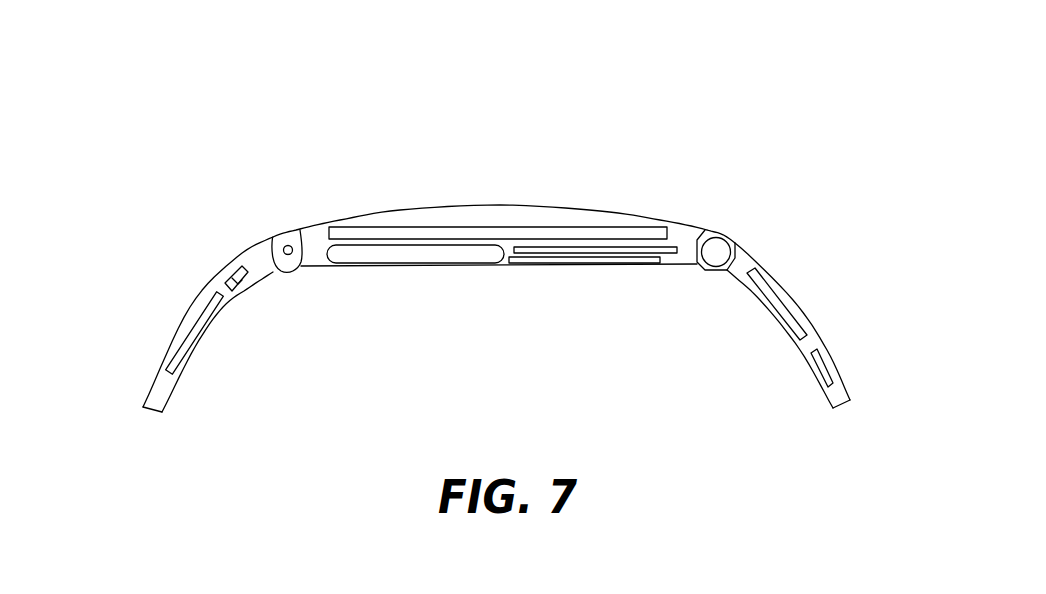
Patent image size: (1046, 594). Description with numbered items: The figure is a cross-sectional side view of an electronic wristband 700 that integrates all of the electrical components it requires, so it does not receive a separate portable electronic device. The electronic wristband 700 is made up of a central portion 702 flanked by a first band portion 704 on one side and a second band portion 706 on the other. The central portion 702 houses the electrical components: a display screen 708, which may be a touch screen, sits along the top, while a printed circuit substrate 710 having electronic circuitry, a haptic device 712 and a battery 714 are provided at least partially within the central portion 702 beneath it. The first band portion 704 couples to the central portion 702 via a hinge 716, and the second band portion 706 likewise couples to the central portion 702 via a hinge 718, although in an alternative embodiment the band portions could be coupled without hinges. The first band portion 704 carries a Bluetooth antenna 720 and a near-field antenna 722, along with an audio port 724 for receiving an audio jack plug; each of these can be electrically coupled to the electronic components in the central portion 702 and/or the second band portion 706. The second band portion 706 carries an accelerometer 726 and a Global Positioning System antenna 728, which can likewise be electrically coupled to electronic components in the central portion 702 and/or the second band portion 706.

The electronic wristband 700 is at (322, 120).
The central portion 702 is at (556, 183).
The first band portion 704 is at (848, 388).
The second band portion 706 is at (157, 373).
The display screen 708 is at (453, 230).
The printed circuit substrate 710 is at (523, 253).
The haptic device 712 is at (603, 263).
The battery 714 is at (402, 255).
The hinge 716 is at (710, 233).
The hinge 718 is at (293, 237).
The Bluetooth antenna 720 is at (778, 297).
The near-field antenna 722 is at (830, 362).
The audio port 724 is at (722, 250).
The accelerometer 726 is at (228, 272).
The Global Positioning System (GPS) antenna 728 is at (188, 330).